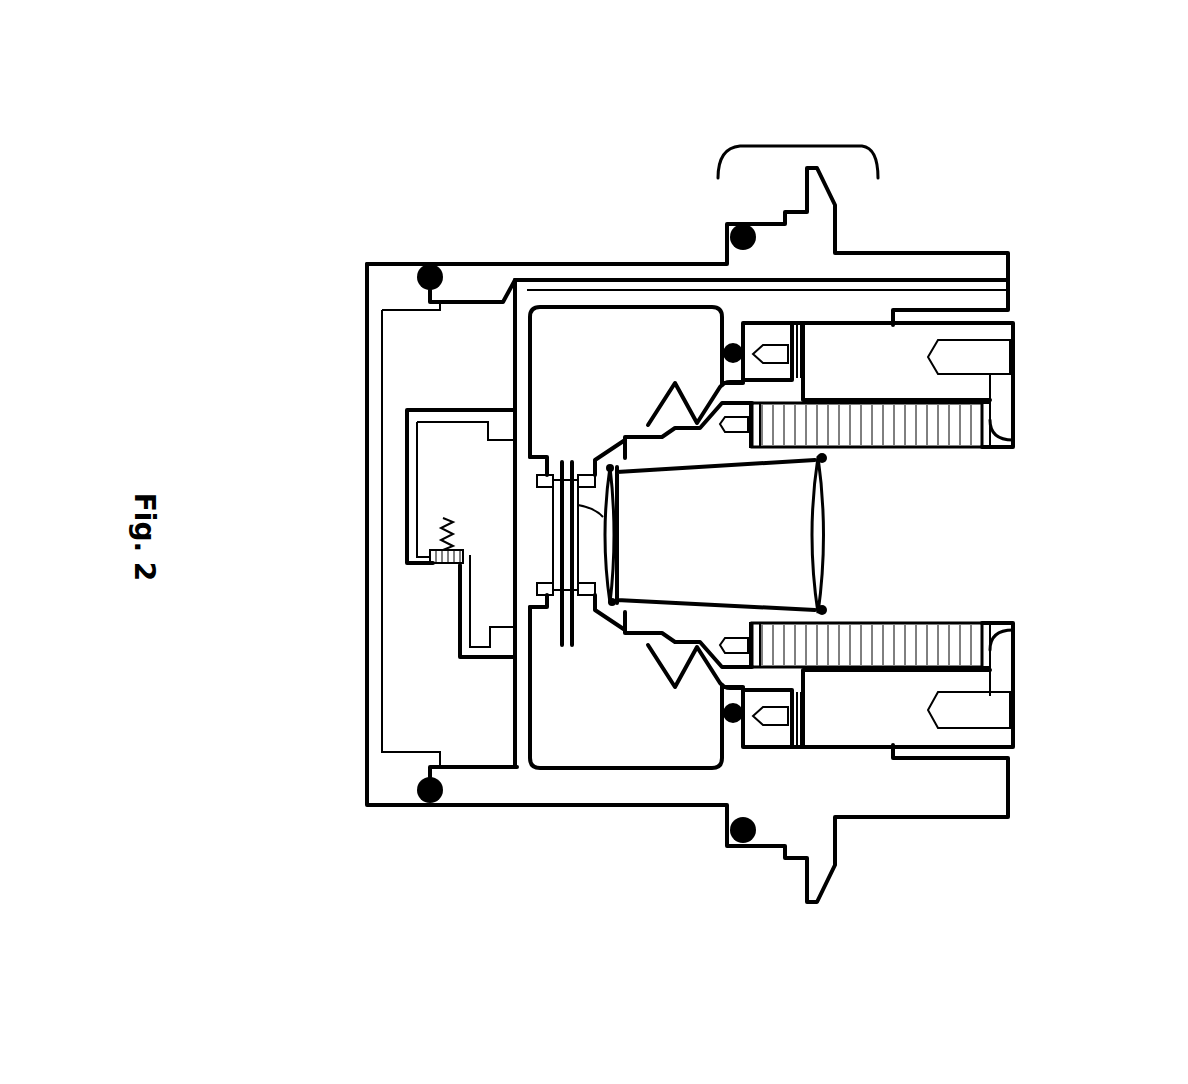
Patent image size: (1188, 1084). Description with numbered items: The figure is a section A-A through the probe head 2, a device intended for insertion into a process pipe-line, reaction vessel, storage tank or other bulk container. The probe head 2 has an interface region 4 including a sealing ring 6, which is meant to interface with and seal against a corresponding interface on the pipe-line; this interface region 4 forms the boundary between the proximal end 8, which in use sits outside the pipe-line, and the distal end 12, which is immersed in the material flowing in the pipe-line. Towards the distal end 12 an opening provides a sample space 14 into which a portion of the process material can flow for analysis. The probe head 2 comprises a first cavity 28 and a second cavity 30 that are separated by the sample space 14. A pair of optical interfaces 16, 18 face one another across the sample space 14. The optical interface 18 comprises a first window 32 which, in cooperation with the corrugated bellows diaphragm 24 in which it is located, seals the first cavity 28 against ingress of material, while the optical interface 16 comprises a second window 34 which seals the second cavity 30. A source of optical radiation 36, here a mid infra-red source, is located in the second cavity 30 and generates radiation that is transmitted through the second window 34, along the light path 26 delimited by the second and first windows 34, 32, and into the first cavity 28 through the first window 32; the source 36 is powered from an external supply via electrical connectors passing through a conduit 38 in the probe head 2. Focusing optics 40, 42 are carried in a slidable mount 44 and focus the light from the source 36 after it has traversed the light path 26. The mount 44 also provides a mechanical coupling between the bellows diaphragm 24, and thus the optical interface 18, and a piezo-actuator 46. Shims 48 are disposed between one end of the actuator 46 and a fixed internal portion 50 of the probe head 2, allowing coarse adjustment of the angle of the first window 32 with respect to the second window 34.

The probe head 2 is at (325, 843).
The interface region 4 is at (800, 145).
The sealing ring 6 is at (741, 224).
The proximal end 8 is at (1110, 774).
The distal end 12 is at (360, 324).
The sample space 14 is at (567, 320).
The optical interface 16 is at (547, 460).
The optical interface 18 is at (613, 433).
The bellows diaphragm 24 is at (690, 396).
The light path 26 is at (576, 653).
The first cavity 28 is at (913, 530).
The second cavity 30 is at (437, 677).
The first window 32 is at (612, 553).
The second window 34 is at (553, 507).
The source of optical radiation 36 is at (440, 522).
The conduit 38 is at (907, 280).
The focusing optics 40 is at (617, 507).
The focusing optics 42 is at (808, 563).
The slidable mount 44 is at (677, 617).
The piezo-actuator 46 is at (913, 448).
The shims 48 is at (1013, 435).
The fixed internal portion 50 is at (883, 702).